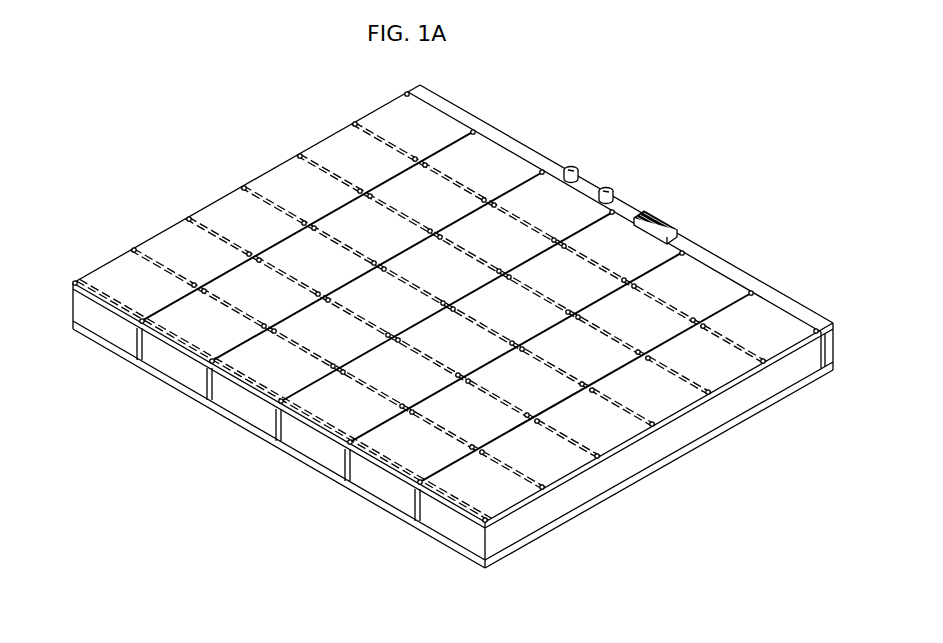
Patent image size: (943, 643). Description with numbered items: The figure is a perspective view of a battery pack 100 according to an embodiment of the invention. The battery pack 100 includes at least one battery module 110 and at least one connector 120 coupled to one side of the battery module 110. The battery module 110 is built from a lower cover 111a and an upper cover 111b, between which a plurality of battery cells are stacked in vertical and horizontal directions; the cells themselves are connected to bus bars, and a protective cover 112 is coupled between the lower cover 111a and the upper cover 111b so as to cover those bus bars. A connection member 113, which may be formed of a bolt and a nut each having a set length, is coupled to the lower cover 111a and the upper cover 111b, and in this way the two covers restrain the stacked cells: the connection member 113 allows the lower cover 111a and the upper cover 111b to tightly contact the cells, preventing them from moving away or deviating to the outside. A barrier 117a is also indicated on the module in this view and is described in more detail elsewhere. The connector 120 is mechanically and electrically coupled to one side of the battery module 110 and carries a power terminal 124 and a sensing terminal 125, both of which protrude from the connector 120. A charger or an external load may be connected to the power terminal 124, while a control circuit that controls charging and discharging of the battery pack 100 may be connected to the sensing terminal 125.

The battery pack 100 is at (184, 99).
The battery module 110 is at (452, 533).
The lower cover 111a is at (84, 334).
The upper cover 111b is at (88, 278).
The protective cover 112 is at (508, 537).
The connection member 113 is at (131, 251).
The barrier 117a is at (77, 307).
The connector 120 is at (775, 284).
The power terminal 124 is at (609, 185).
The sensing terminal 125 is at (660, 217).